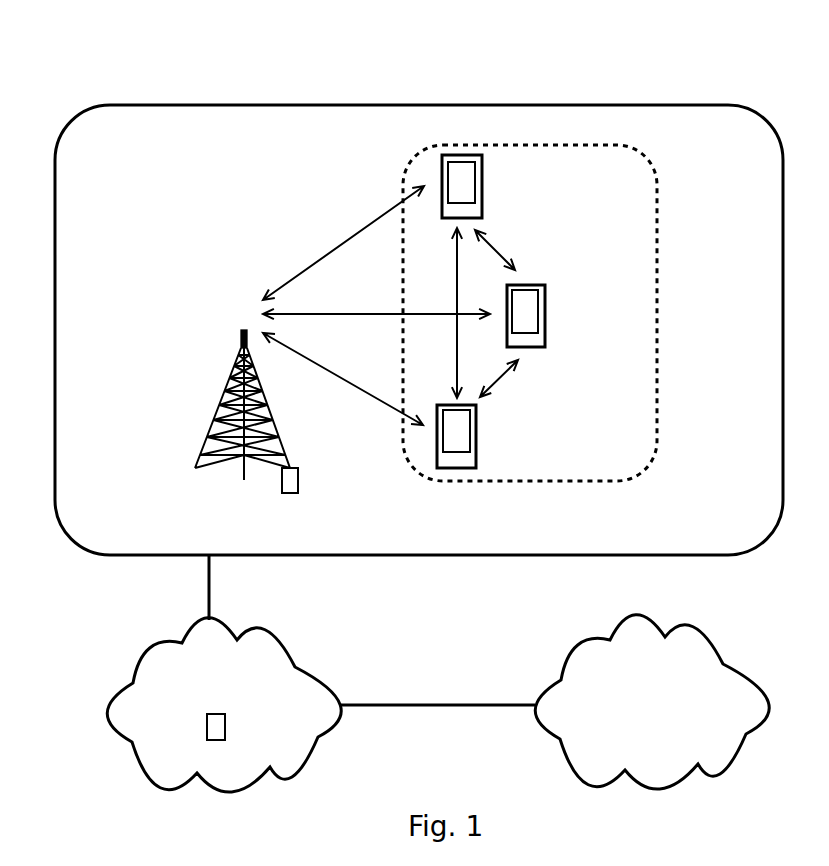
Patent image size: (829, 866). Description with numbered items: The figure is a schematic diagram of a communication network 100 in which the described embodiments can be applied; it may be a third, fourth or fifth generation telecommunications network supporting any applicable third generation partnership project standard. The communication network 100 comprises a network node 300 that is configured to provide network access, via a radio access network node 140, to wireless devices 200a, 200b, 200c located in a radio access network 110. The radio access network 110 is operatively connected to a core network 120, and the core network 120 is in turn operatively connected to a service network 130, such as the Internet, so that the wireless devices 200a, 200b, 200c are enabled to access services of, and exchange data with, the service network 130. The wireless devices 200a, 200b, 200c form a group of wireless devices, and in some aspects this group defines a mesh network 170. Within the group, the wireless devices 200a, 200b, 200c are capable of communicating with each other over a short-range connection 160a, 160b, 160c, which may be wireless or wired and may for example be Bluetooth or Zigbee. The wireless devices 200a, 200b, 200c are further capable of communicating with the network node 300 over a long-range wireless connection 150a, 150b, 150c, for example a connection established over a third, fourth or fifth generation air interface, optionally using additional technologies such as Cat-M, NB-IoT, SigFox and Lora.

The communication network 100 is at (138, 67).
The radio access network 110 is at (748, 149).
The core network 120 is at (202, 697).
The service network 130 is at (678, 722).
The radio access network node 140 is at (240, 323).
The long-range wireless connection 150a is at (392, 313).
The long-range wireless connection 150b is at (350, 240).
The long-range wireless connection 150c is at (392, 357).
The short-range connection 160a is at (498, 253).
The short-range connection 160b is at (457, 278).
The short-range connection 160c is at (500, 379).
The mesh network 170 is at (633, 457).
The wireless device 200a is at (545, 318).
The wireless device 200b is at (482, 188).
The wireless device 200c is at (476, 440).
The network node 300 is at (298, 478).